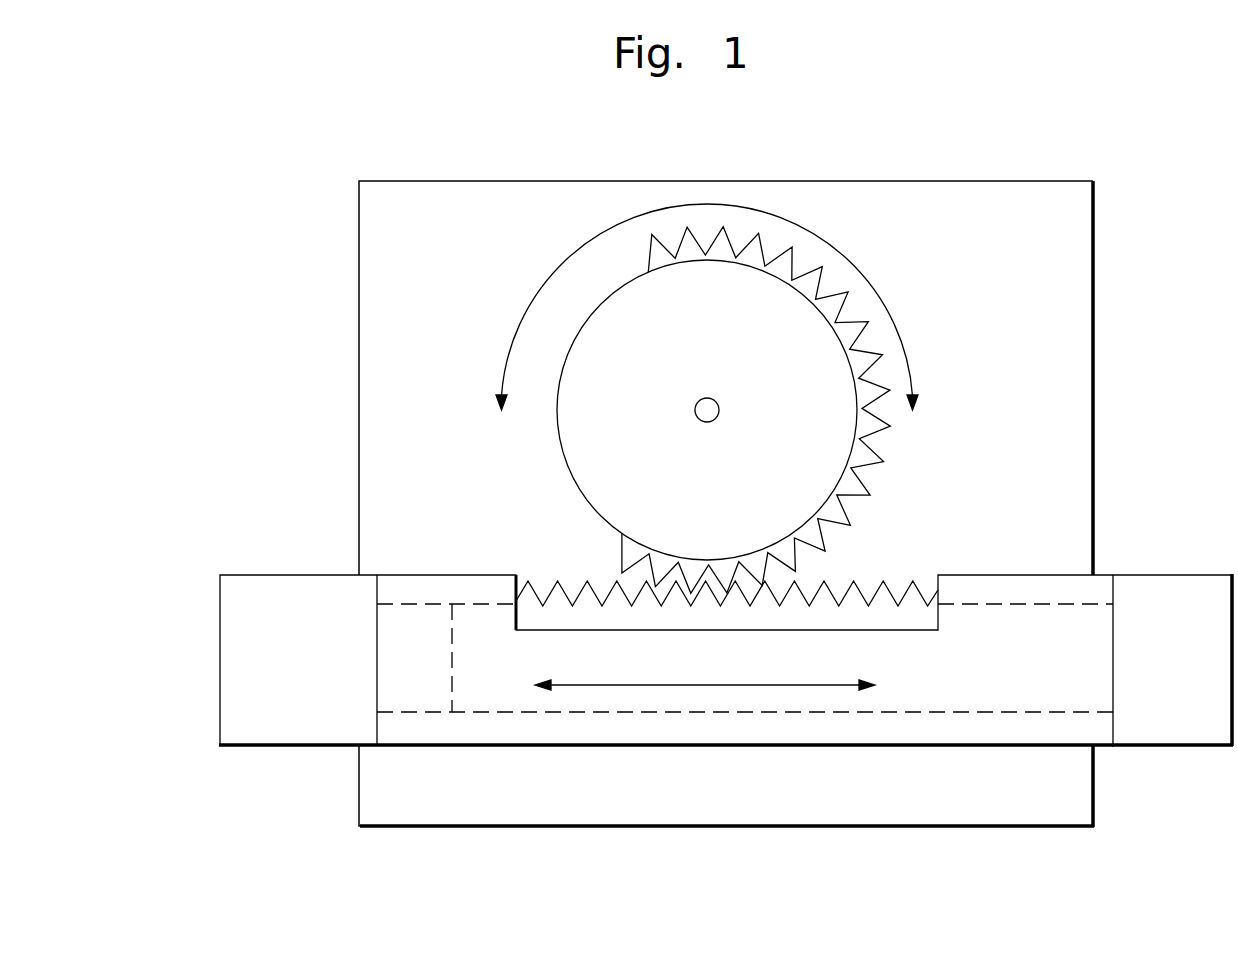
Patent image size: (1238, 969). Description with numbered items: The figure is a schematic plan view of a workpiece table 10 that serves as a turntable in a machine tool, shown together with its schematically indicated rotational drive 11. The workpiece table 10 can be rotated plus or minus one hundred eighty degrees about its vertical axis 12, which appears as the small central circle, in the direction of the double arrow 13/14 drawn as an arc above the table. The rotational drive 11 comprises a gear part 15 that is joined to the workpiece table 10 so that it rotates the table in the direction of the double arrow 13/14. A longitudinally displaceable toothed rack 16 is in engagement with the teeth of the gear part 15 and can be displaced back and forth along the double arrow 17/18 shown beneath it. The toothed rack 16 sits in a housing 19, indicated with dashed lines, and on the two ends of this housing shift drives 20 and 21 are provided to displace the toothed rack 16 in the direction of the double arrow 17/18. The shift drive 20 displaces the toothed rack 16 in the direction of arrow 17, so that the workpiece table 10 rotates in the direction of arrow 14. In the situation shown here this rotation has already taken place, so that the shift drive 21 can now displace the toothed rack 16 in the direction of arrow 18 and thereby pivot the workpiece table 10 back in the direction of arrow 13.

The workpiece table 10 is at (1001, 289).
The rotational drive 11 is at (1137, 502).
The vertical axis 12 is at (695, 410).
The arrow 13 is at (918, 408).
The arrow 14 is at (499, 406).
The gear part 15 is at (784, 356).
The toothed rack 16 is at (768, 610).
The arrow 17 is at (878, 686).
The arrow 18 is at (536, 685).
The housing 19 is at (495, 728).
The shift drive 20 is at (301, 666).
The shift drive 21 is at (1186, 664).